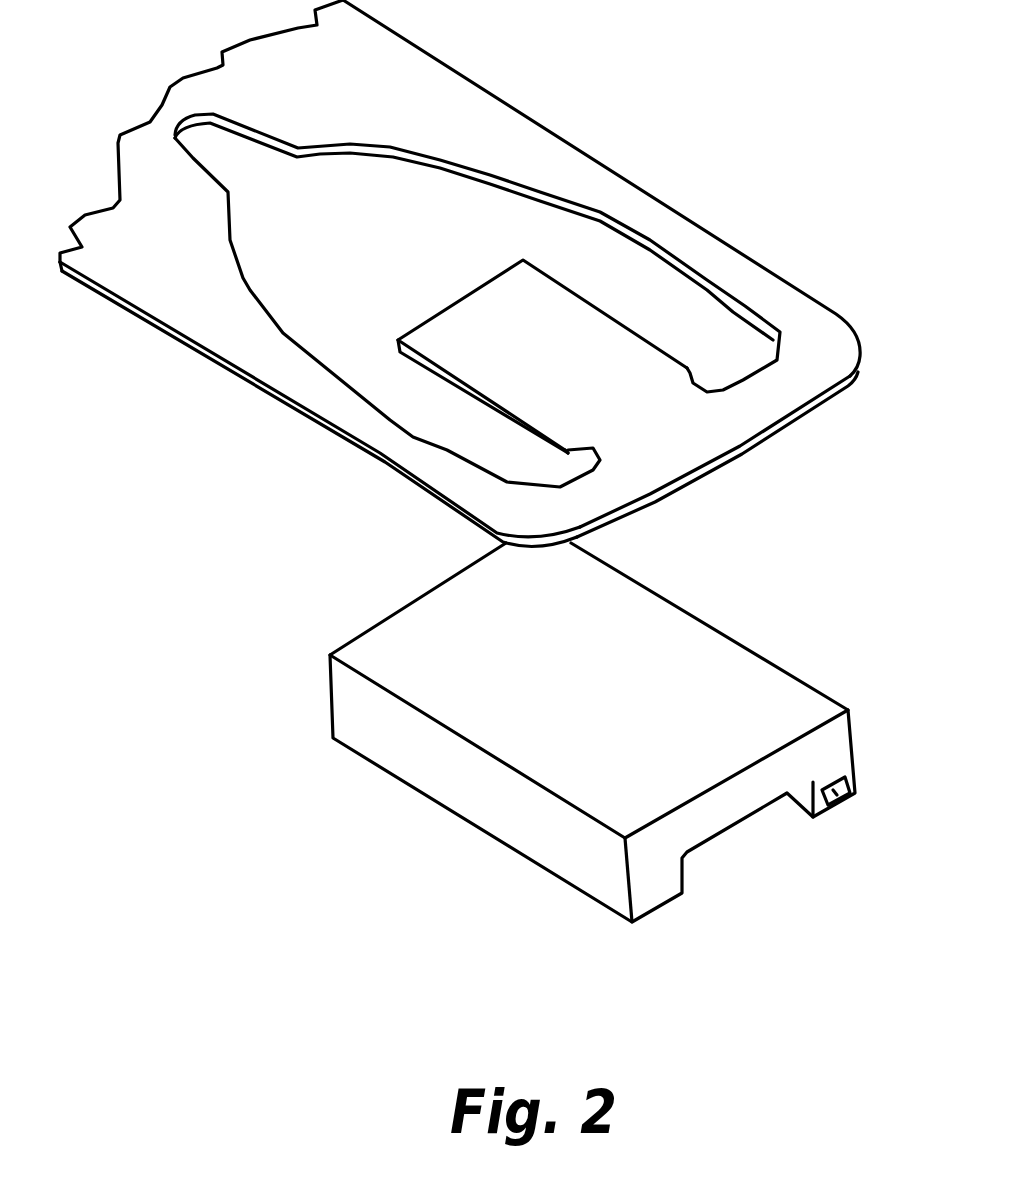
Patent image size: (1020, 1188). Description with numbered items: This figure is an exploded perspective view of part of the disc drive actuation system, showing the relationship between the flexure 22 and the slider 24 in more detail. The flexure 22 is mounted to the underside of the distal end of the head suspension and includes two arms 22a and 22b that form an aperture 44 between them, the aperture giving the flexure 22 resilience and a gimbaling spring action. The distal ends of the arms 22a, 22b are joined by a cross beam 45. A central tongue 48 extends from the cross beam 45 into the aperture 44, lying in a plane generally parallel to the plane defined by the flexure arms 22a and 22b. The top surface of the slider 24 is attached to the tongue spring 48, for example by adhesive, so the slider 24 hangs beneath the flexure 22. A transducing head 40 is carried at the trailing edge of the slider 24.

The flexure 22 is at (460, 273).
The arm 22a is at (412, 63).
The arm 22b is at (357, 415).
The aperture 44 is at (475, 193).
The cross beam 45 is at (683, 425).
The central tongue 48 is at (570, 323).
The slider 24 is at (629, 732).
The transducing head 40 is at (833, 793).